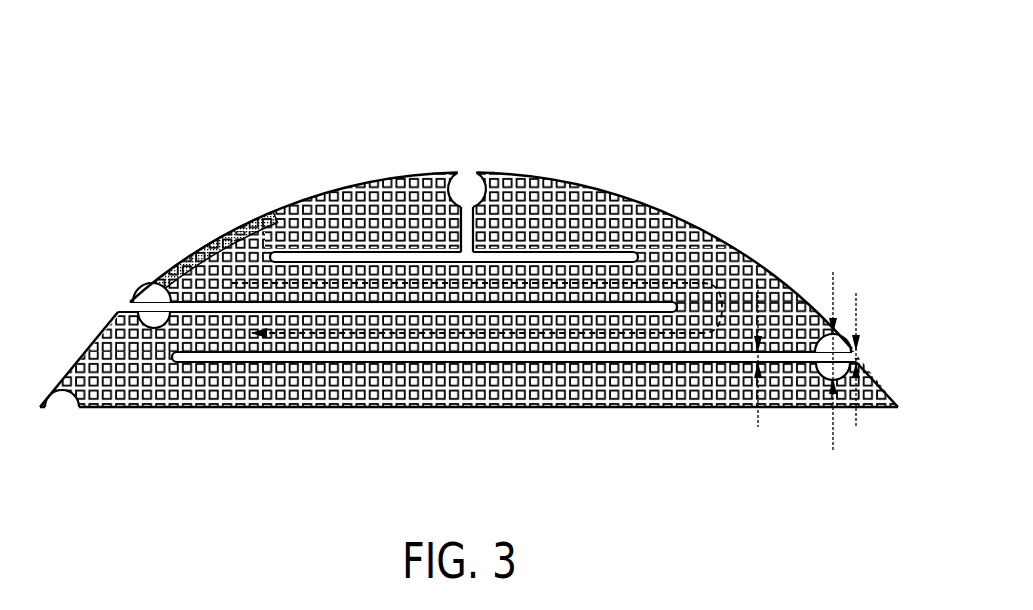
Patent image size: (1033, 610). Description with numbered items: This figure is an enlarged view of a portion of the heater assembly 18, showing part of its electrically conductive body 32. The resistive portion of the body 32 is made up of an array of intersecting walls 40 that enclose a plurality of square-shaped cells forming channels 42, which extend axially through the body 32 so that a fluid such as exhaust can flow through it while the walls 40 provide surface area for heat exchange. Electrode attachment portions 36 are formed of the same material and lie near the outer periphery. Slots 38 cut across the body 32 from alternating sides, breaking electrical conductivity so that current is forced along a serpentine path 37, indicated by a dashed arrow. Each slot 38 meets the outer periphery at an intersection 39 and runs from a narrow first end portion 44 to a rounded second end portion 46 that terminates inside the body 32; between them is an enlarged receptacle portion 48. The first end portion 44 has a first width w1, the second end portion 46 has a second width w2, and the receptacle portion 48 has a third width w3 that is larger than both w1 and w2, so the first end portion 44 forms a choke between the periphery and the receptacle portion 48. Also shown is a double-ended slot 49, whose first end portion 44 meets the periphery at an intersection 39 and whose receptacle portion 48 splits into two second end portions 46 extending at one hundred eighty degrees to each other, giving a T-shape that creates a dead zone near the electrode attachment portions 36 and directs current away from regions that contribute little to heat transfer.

The heater assembly 18 is at (98, 96).
The body 32 is at (773, 274).
The electrode attachment portion 36 is at (251, 228).
The serpentine path 37 is at (716, 284).
The slots 38 is at (424, 362).
The intersections 39 is at (107, 302).
The intersecting walls 40 is at (576, 410).
The channels 42 is at (284, 385).
The first end portion 44 is at (465, 162).
The second end portion 46 is at (263, 256).
The receptacle portion 48 is at (482, 183).
The double-ended slot 49 is at (556, 253).
The first width w1 is at (758, 427).
The second width w2 is at (856, 427).
The third width w3 is at (834, 285).